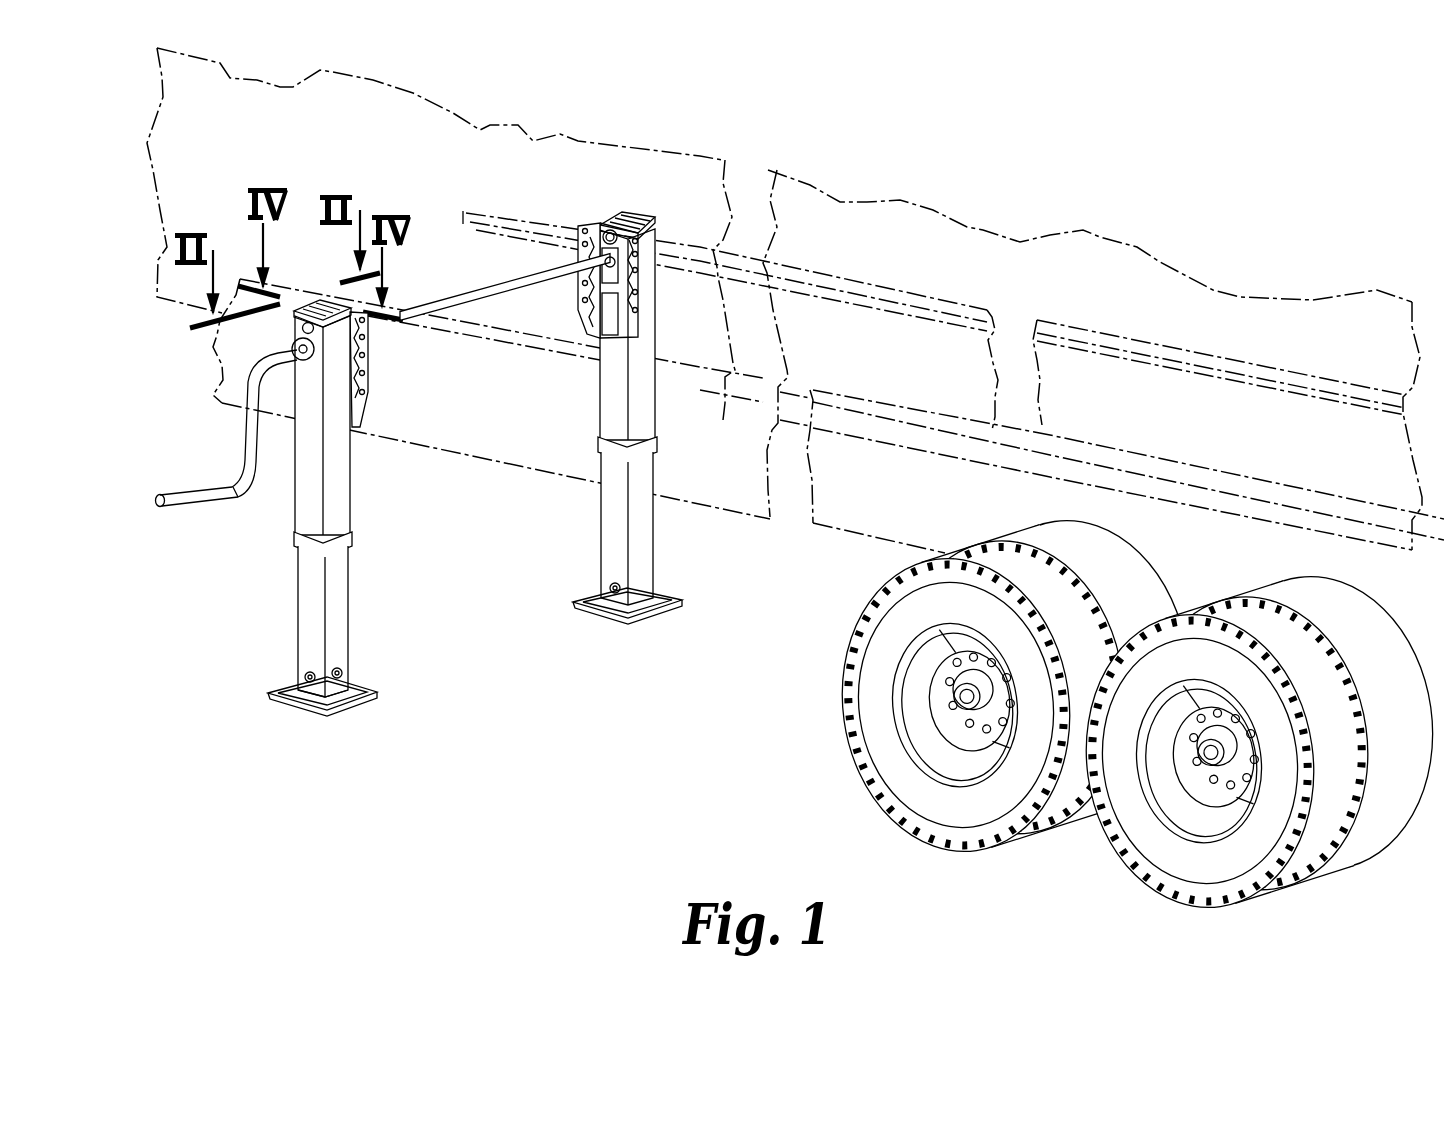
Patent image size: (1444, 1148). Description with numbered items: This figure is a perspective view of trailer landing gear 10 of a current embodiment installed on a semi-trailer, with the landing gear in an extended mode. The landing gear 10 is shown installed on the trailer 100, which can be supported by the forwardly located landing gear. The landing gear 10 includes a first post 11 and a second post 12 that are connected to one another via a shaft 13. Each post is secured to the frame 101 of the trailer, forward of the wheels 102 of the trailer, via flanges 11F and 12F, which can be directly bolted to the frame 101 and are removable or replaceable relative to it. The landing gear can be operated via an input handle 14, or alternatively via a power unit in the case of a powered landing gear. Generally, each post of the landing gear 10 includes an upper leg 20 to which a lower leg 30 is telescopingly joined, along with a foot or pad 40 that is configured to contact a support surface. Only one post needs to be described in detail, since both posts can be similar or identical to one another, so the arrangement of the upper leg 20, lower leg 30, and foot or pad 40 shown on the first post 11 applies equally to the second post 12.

The trailer 100 is at (212, 177).
The frame 101 is at (230, 373).
The wheels 102 is at (832, 687).
The landing gear 10 is at (418, 446).
The first post 11 is at (283, 511).
The flange 11F is at (367, 366).
The second post 12 is at (649, 418).
The flange 12F is at (640, 287).
The shaft 13 is at (518, 285).
The input handle 14 is at (210, 486).
The upper leg 20 is at (291, 507).
The lower leg 30 is at (293, 620).
The foot or pad 40 is at (271, 698).